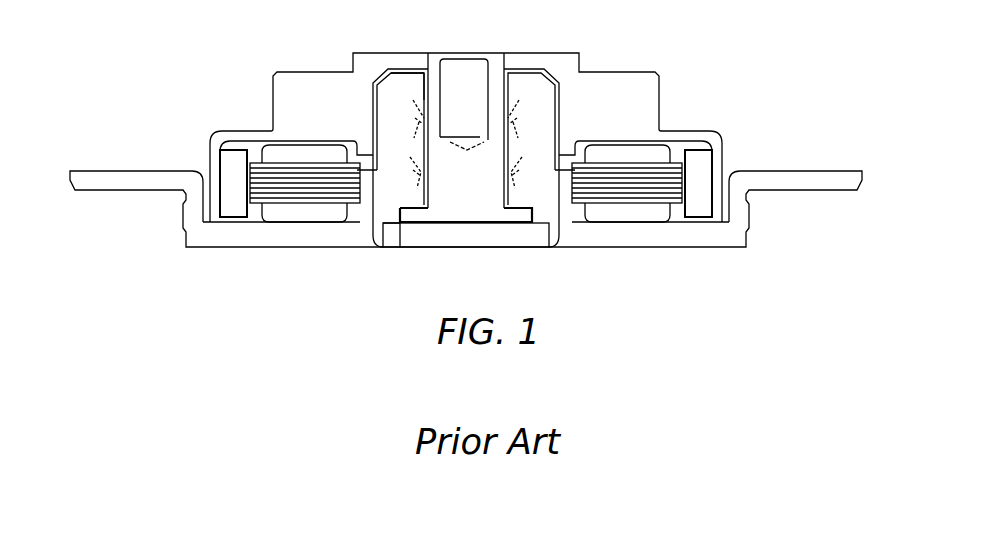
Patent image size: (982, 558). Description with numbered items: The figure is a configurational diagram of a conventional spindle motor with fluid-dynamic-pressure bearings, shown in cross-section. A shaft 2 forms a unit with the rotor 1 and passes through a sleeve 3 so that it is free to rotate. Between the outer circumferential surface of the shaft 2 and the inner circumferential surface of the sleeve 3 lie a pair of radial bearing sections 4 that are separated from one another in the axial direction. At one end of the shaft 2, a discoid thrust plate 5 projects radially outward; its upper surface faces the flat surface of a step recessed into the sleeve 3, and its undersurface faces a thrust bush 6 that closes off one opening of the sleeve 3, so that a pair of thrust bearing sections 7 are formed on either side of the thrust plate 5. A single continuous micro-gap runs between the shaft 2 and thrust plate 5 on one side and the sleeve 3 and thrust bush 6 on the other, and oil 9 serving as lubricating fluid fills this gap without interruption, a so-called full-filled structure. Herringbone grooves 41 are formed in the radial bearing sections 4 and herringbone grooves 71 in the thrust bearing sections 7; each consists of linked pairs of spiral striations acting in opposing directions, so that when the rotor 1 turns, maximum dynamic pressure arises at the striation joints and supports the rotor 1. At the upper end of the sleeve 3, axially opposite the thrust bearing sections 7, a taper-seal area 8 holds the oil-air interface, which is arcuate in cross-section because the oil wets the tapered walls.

The rotor 1 is at (572, 58).
The shaft 2 is at (492, 78).
The sleeve 3 is at (533, 88).
The radial bearing section 4 is at (513, 160).
The herringbone groove 41 is at (417, 160).
The thrust plate 5 is at (402, 222).
The thrust bush 6 is at (468, 232).
The thrust bearing section 7 is at (412, 208).
The herringbone groove 71 is at (512, 222).
The taper-seal area 8 is at (428, 88).
The oil 9 is at (418, 96).